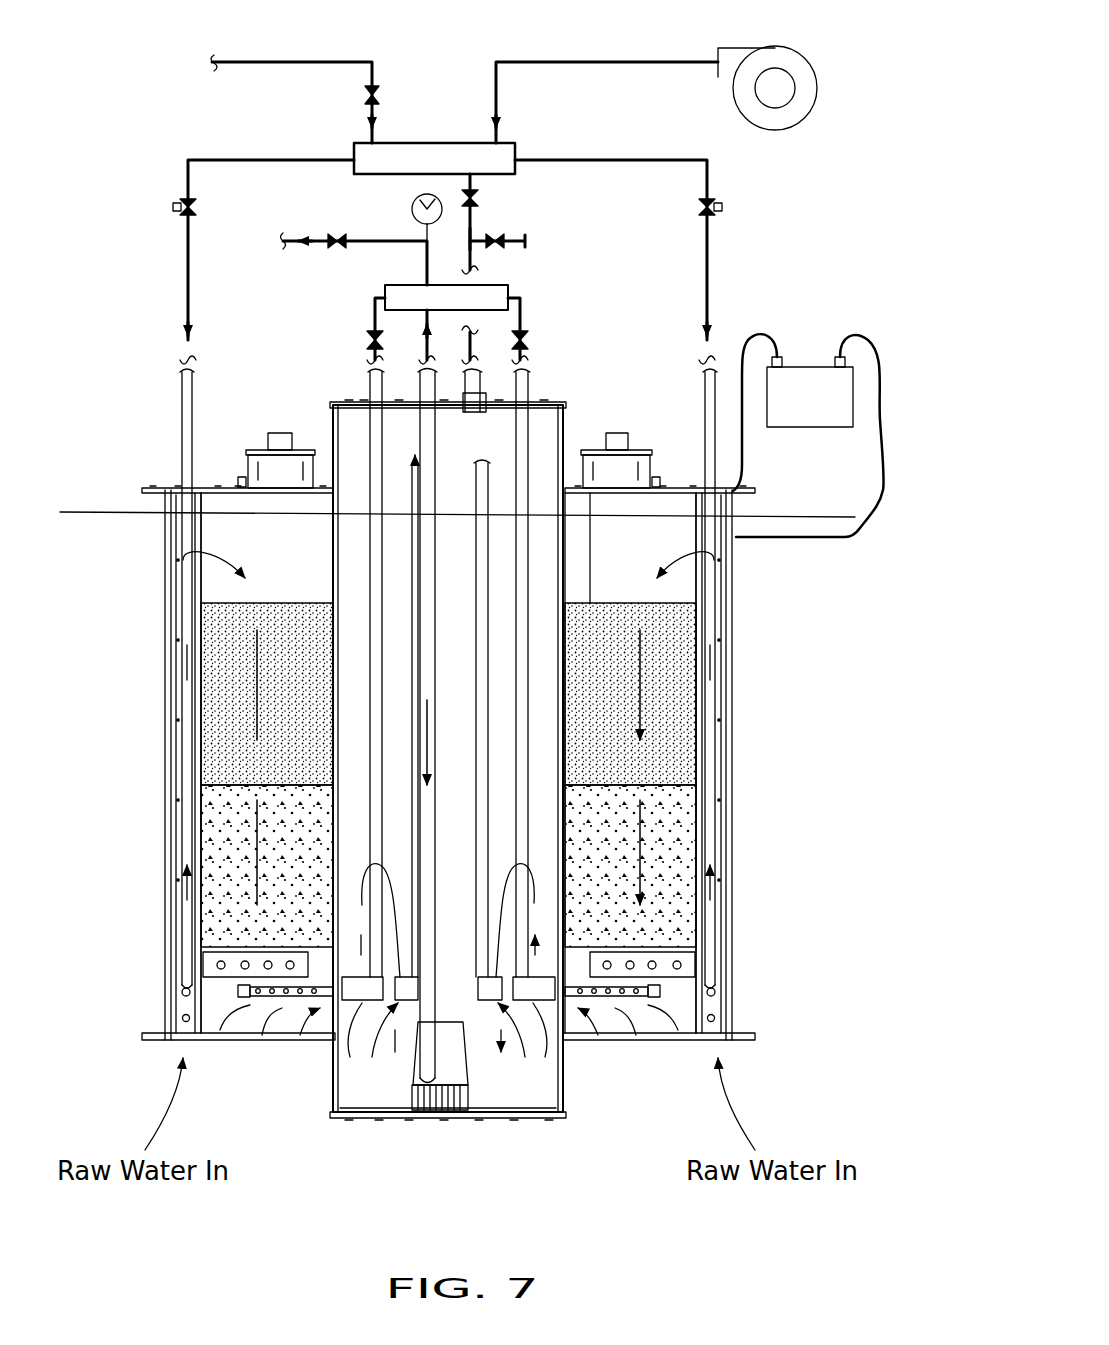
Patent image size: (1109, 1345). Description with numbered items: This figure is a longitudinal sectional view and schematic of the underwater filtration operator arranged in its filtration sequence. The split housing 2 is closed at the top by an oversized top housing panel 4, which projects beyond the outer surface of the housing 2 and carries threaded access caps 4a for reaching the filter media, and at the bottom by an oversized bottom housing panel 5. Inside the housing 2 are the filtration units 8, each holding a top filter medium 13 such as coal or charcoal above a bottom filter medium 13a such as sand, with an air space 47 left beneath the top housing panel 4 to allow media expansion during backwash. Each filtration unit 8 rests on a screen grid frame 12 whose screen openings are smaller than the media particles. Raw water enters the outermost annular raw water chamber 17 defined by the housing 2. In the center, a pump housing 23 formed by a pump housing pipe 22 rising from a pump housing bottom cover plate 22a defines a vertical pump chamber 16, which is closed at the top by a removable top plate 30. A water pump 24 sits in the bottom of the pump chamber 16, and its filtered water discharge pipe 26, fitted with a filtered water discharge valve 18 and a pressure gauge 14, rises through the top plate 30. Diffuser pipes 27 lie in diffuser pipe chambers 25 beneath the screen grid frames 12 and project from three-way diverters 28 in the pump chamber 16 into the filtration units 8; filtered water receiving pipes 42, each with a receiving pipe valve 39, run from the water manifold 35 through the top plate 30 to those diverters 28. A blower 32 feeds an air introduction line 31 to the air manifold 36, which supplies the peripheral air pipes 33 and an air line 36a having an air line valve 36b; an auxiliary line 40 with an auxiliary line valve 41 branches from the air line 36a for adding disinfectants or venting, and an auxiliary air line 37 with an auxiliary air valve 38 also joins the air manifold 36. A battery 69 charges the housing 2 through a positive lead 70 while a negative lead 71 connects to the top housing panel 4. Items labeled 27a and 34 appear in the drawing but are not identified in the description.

The housing 2 is at (163, 717).
The top housing panel 4 is at (200, 487).
The access caps 4a is at (270, 462).
The bottom housing panel 5 is at (150, 1042).
The filtration units 8 is at (197, 615).
The screen grid frame 12 is at (205, 967).
The top filter medium 13 is at (222, 668).
The bottom filter medium 13a is at (215, 885).
The pressure gauge 14 is at (412, 205).
The pump chamber 16 is at (362, 1088).
The raw water chamber 17 is at (172, 768).
The filtered water discharge valve 18 is at (338, 250).
The pump housing pipe 22 is at (352, 437).
The pump housing bottom cover plate 22a is at (520, 1120).
The pump housing 23 is at (570, 402).
The water pump 24 is at (466, 1075).
The diffuser pipe chambers 25 is at (215, 1008).
The filtered water discharge pipe 26 is at (424, 238).
The diffuser pipes 27 is at (246, 1012).
The flow path 27a is at (300, 1020).
The three-way diverters 28 is at (362, 1003).
The top plate 30 is at (490, 410).
The air introduction line 31 is at (498, 98).
The blower 32 is at (810, 60).
The peripheral air pipes 33 is at (232, 158).
The valve 34 is at (172, 207).
The water manifold 35 is at (512, 290).
The air manifold 36 is at (405, 138).
The air line 36a is at (472, 228).
The air line valve 36b is at (470, 222).
The auxiliary air line 37 is at (250, 62).
The auxiliary air valve 38 is at (362, 95).
The receiving pipe valve 39 is at (372, 340).
The auxiliary line 40 is at (530, 241).
The auxiliary line valve 41 is at (497, 247).
The filtered water receiving pipes 42 is at (375, 298).
The air space 47 is at (235, 538).
The battery 69 is at (800, 411).
The positive lead 70 is at (880, 460).
The negative lead 71 is at (746, 345).